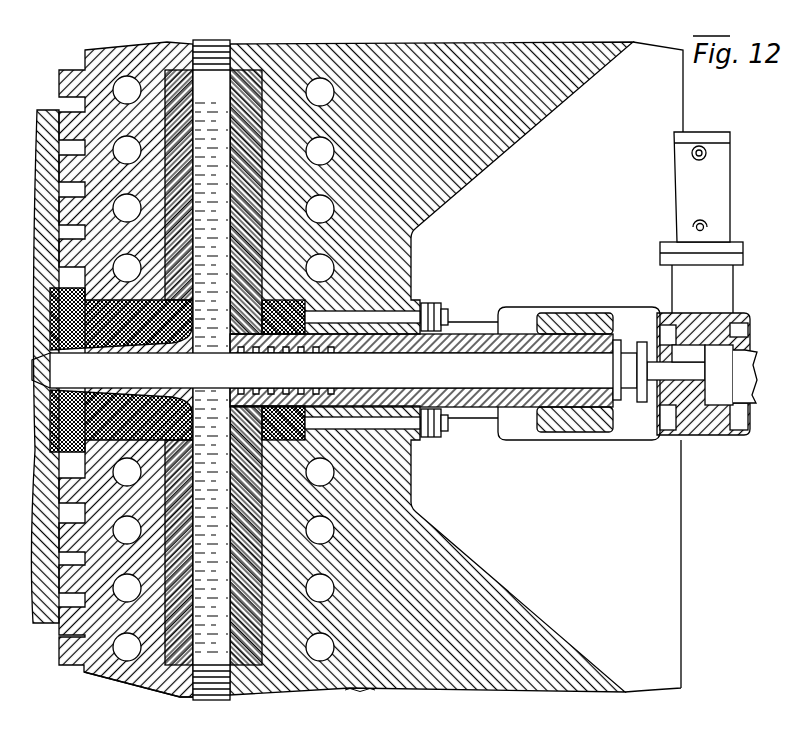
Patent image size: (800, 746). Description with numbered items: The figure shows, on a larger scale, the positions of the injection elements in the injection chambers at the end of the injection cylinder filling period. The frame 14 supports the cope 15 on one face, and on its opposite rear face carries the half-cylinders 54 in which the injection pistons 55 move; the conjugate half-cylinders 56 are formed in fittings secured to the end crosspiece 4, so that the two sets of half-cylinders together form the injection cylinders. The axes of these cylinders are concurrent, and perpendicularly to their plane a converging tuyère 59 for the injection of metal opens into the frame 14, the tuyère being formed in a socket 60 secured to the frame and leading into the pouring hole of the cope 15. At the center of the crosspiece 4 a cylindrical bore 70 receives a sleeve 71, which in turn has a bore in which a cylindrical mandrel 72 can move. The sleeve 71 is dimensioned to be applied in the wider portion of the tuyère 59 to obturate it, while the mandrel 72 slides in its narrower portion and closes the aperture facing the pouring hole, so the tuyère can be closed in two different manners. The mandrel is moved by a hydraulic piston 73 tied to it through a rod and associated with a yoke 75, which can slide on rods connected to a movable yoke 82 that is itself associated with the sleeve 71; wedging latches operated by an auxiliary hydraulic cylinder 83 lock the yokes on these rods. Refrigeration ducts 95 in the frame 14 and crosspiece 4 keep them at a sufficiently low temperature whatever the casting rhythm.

The end crosspiece 4 is at (525, 117).
The frame 14 is at (84, 676).
The cope 15 is at (50, 110).
The half-cylinders 54 is at (173, 90).
The injection pistons 55 is at (205, 55).
The conjugate half-cylinders 56 is at (247, 190).
The converging tuyère 59 is at (153, 345).
The socket 60 is at (68, 413).
The cylindrical bore 70 is at (260, 328).
The sleeve 71 is at (418, 340).
The cylindrical mandrel 72 is at (258, 374).
The hydraulic piston 73 is at (740, 393).
The yoke 75 is at (720, 305).
The movable yoke 82 is at (568, 320).
The auxiliary hydraulic cylinder 83 is at (720, 178).
The refrigeration ducts 95 is at (121, 651).